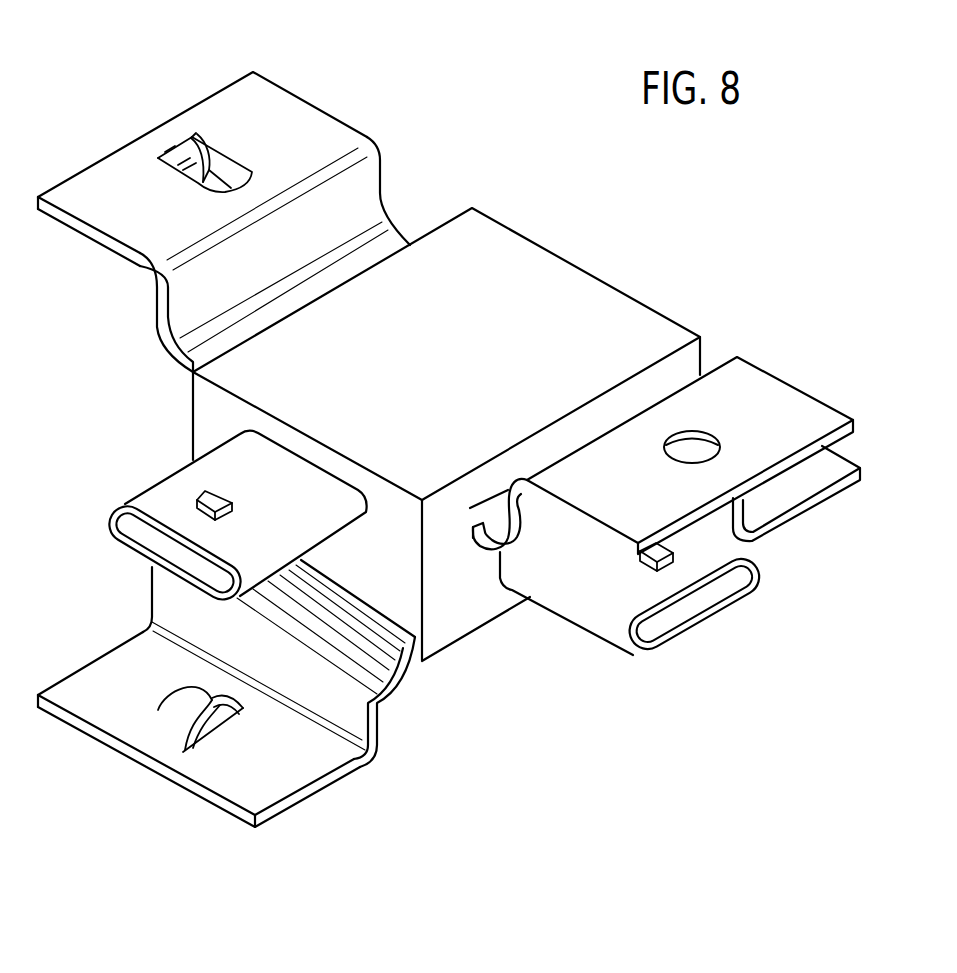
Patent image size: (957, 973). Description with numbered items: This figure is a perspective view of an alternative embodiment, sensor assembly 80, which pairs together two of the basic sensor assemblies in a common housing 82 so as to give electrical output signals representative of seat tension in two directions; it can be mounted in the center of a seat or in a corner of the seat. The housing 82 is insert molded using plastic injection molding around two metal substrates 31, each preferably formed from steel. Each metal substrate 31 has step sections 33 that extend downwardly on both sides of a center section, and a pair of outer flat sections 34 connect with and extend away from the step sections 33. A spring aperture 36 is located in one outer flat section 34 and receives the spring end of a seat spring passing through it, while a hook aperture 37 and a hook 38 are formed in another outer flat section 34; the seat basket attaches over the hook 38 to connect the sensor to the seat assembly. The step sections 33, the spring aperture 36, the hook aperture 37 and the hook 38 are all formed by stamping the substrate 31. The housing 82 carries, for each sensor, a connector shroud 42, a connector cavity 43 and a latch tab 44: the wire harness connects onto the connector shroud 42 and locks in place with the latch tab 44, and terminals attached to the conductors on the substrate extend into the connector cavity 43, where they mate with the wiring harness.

The sensor assembly 80 is at (121, 36).
The housing 82 is at (520, 234).
The metal substrate 31 is at (68, 176).
The step sections 33 is at (153, 305).
The outer flat sections 34 is at (294, 118).
The spring aperture 36 is at (710, 443).
The hook aperture 37 is at (233, 157).
The hook 38 is at (190, 137).
The connector shroud 42 is at (126, 494).
The connector cavity 43 is at (128, 527).
The latch tab 44 is at (198, 497).